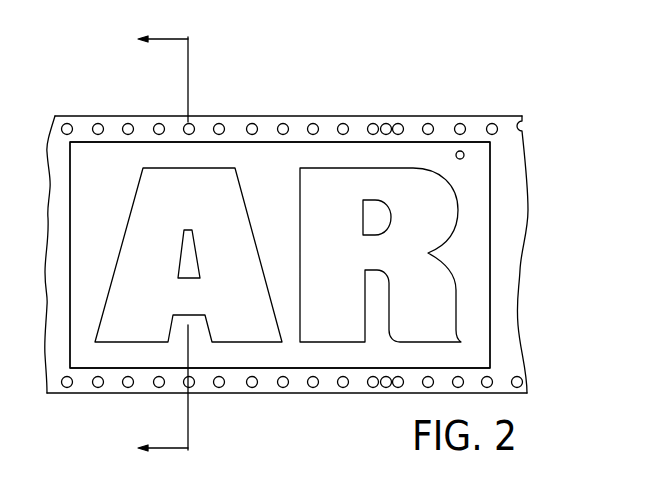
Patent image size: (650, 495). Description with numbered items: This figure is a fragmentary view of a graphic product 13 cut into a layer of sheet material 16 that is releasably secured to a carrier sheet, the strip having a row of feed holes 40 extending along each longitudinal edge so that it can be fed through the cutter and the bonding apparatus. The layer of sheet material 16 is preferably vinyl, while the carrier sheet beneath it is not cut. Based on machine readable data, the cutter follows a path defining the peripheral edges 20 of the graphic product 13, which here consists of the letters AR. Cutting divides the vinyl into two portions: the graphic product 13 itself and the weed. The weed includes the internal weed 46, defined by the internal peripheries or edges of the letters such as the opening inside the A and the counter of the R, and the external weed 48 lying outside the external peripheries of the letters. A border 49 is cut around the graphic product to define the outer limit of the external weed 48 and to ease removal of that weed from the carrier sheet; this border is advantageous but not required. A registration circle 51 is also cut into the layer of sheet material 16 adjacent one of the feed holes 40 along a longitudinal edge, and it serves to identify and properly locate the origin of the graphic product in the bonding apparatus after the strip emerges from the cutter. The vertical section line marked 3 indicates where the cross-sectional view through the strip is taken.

The section line 3- 3 is at (176, 245).
The graphic product 13 is at (213, 172).
The layer of sheet material 16 is at (505, 142).
The peripheral edges 20 is at (298, 193).
The feed holes 40 is at (400, 130).
The internal weed 46 is at (365, 227).
The external weed 48 is at (470, 263).
The border 49 is at (490, 213).
The registration circle 51 is at (465, 157).